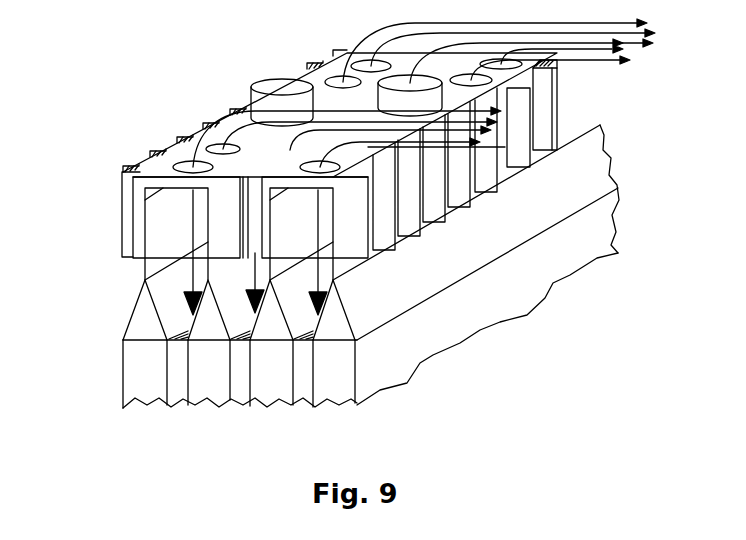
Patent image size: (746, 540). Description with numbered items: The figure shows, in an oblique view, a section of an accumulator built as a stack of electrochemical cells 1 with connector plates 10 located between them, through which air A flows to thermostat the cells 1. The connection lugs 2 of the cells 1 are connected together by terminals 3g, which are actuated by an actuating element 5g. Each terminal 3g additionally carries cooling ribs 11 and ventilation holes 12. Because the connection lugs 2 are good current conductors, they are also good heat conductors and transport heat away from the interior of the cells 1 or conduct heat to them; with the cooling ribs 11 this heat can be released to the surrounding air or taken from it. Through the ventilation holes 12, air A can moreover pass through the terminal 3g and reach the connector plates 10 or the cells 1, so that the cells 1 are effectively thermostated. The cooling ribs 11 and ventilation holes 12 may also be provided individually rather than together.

The electrochemical cell 1 is at (540, 273).
The connection lug 2 is at (157, 262).
The terminal 3g is at (137, 228).
The actuating element 5g is at (258, 80).
The connector plate 10 is at (302, 362).
The cooling rib 11 is at (122, 180).
The ventilation hole 12 is at (175, 160).
The air A is at (511, 51).